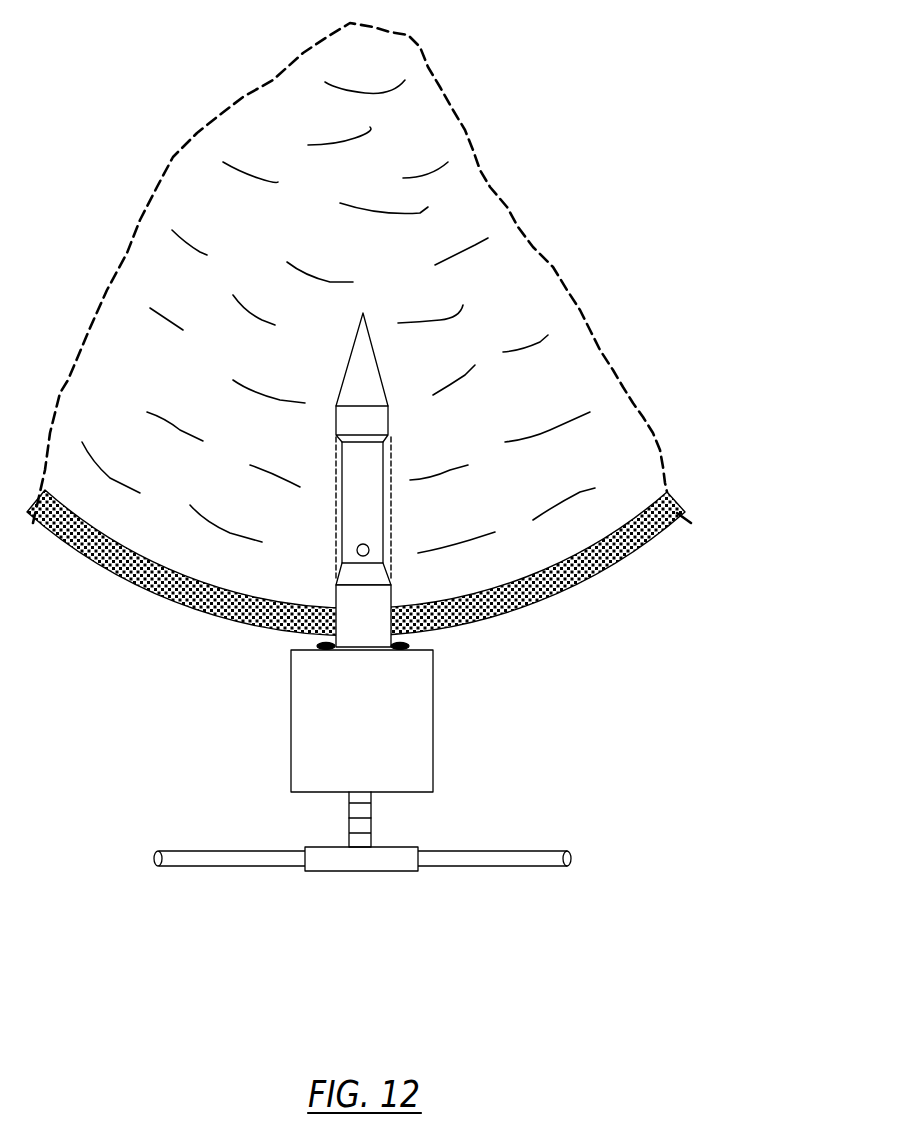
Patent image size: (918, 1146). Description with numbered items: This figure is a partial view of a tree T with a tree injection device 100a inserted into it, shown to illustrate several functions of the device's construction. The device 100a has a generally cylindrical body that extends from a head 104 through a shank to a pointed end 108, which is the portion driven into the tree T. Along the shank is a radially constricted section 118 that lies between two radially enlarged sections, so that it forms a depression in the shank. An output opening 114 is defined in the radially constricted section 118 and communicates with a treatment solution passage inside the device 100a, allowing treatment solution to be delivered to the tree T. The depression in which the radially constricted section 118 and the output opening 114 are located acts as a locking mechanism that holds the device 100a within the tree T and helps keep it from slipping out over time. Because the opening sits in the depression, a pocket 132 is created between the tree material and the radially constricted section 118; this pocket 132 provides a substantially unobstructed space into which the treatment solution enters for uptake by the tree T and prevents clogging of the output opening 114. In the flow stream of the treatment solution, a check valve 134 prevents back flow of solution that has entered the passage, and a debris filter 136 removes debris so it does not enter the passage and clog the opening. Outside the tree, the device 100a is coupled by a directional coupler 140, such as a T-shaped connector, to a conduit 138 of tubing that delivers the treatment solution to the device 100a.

The tree T is at (468, 182).
The tree injection device 100a is at (315, 532).
The head 104 is at (403, 797).
The pointed end 108 is at (366, 303).
The output opening 114 is at (356, 550).
The radially constricted section 118 is at (363, 487).
The pocket 132 is at (383, 524).
The check valve 134 is at (352, 808).
The debris filter 136 is at (352, 828).
The conduit 138 is at (190, 867).
The directional coupler 140 is at (358, 888).